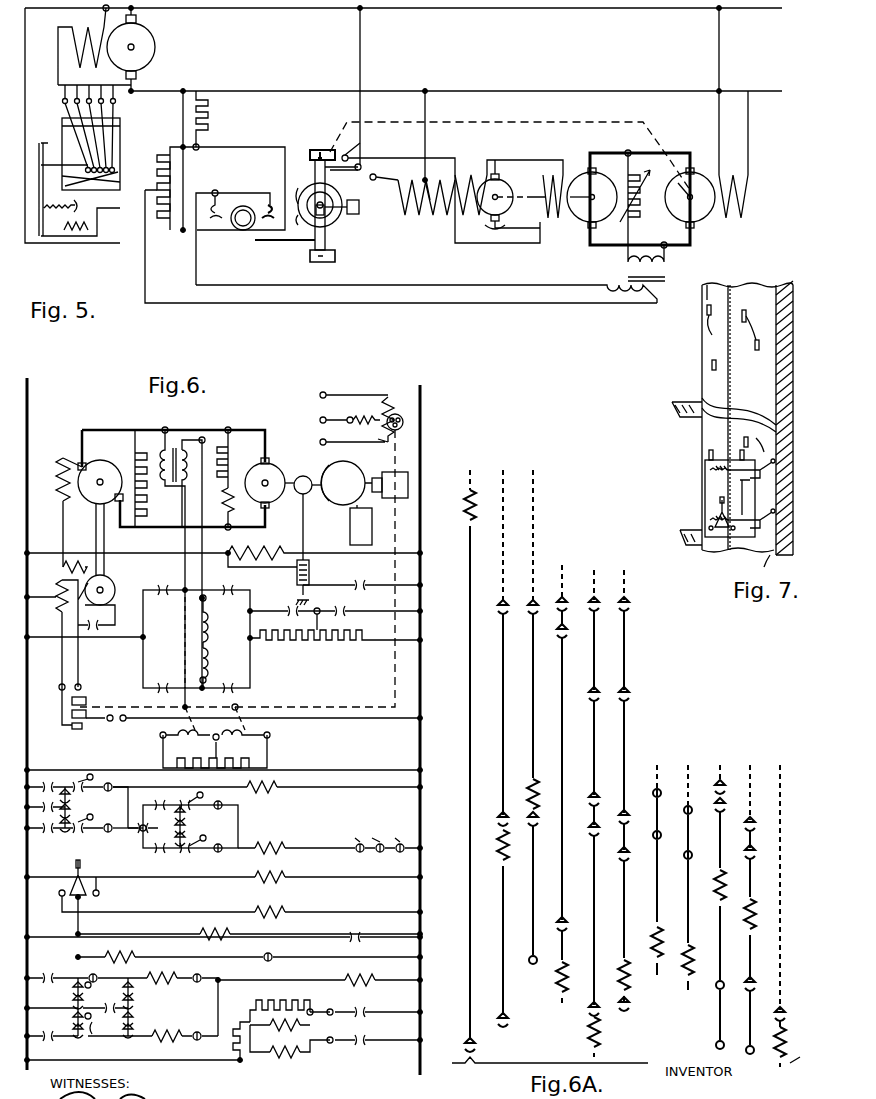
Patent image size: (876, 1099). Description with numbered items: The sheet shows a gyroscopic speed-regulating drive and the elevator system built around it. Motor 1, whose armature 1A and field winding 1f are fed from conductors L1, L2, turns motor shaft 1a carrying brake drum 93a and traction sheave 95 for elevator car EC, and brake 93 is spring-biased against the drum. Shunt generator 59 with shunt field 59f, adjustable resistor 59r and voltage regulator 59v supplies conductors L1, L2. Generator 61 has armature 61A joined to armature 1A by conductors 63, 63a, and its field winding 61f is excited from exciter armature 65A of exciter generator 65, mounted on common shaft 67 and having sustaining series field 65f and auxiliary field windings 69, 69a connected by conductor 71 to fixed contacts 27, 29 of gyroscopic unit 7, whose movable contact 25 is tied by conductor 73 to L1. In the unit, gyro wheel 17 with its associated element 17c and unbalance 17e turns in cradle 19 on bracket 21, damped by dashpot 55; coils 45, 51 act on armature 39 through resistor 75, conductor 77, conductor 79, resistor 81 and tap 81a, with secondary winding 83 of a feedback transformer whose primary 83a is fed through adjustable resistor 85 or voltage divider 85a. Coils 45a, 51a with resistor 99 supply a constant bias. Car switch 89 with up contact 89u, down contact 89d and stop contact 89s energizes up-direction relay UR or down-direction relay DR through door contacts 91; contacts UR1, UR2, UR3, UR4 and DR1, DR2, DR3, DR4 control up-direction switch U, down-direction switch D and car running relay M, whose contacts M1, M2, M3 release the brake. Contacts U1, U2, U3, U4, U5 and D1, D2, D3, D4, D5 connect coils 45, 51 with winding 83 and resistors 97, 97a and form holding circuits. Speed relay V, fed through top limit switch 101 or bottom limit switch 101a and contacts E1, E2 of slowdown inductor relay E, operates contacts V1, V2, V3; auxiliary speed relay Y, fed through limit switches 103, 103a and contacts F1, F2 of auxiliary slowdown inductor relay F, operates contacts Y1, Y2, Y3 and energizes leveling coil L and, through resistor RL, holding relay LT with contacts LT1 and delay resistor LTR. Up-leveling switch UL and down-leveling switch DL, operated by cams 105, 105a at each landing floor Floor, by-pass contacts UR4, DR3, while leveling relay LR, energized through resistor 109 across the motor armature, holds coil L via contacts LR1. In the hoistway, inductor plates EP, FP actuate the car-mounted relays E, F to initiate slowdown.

In FIG. 5, the motor 1 is at (690, 201).
In FIG. 6, the motor 1 is at (268, 456).
In FIG. 5, the motor shaft 1a is at (676, 190).
In FIG. 6, the motor shaft 1a is at (280, 475).
In FIG. 5, the motor armature 1A is at (680, 220).
In FIG. 5, the field winding 1f is at (749, 216).
In FIG. 6, the field winding 1f is at (270, 540).
In FIG. 5, the gyroscopic unit 7 is at (500, 156).
In FIG. 6, the gyroscopic unit 7 is at (388, 472).
In FIG. 5, the gyro wheel 17 is at (330, 222).
In FIG. 6, the gyro wheel 17 is at (398, 412).
In FIG. 5, the governor contacts 17c is at (295, 229).
In FIG. 6, the governor contacts 17c is at (378, 412).
In FIG. 5, the unbalance 17e is at (298, 187).
In FIG. 5, the cradle 19 is at (326, 238).
In FIG. 5, the U-shaped bracket 21 is at (337, 262).
In FIG. 5, the movable contact 25 is at (343, 176).
In FIG. 6, the movable contact 25 is at (90, 720).
In FIG. 5, the fixed contact 27 is at (378, 172).
In FIG. 6, the fixed contact 27 is at (80, 735).
In FIG. 5, the fixed contact 29 is at (356, 154).
In FIG. 6, the fixed contact 29 is at (92, 690).
In FIG. 5, the armature 39 is at (235, 226).
In FIG. 5, the coil 45 is at (220, 205).
In FIG. 6, the coil 45 is at (208, 625).
In FIG. 6, the coil 45a is at (192, 740).
In FIG. 5, the coil 51 is at (276, 196).
In FIG. 6, the coil 51 is at (209, 658).
In FIG. 6, the coil 51a is at (236, 740).
In FIG. 5, the air dashpot 55 is at (343, 195).
In FIG. 5, the direct-current generator 59 is at (142, 50).
In FIG. 5, the shunt field 59f is at (96, 27).
In FIG. 5, the adjustable resistor 59r is at (108, 86).
In FIG. 5, the voltage regulator 59v is at (73, 169).
In FIG. 5, the direct-current generator 61 is at (561, 241).
In FIG. 6, the direct-current generator 61 is at (100, 473).
In FIG. 5, the generator field winding 61f is at (546, 178).
In FIG. 6, the generator field winding 61f is at (64, 458).
In FIG. 5, the generator armature 61A is at (586, 172).
In FIG. 5, the conductor 63 is at (602, 153).
In FIG. 5, the conductor 63a is at (625, 250).
In FIG. 5, the exciter generator 65 is at (507, 185).
In FIG. 6, the exciter generator 65 is at (115, 585).
In FIG. 5, the sustaining series field winding 65f is at (460, 178).
In FIG. 6, the sustaining series field winding 65f is at (64, 560).
In FIG. 5, the exciter armature 65A is at (509, 223).
In FIG. 5, the common shaft 67 is at (517, 205).
In FIG. 6, the common shaft 67 is at (95, 522).
In FIG. 5, the auxiliary field winding 69 is at (403, 215).
In FIG. 6, the auxiliary field winding 69 is at (58, 615).
In FIG. 5, the auxiliary field winding 69a is at (440, 216).
In FIG. 6, the auxiliary field winding 69a is at (80, 603).
In FIG. 5, the conductor 71 is at (428, 112).
In FIG. 5, the conductor 73 is at (362, 60).
In FIG. 5, the resistor 75 is at (209, 116).
In FIG. 5, the conductor 77 is at (271, 148).
In FIG. 5, the conductor 79 is at (184, 170).
In FIG. 5, the resistor 81 is at (159, 158).
In FIG. 5, the adjustable tap 81a is at (155, 190).
In FIG. 5, the secondary winding 83 is at (670, 301).
In FIG. 6, the secondary winding 83 is at (205, 440).
In FIG. 5, the primary winding 83a is at (670, 263).
In FIG. 6, the primary winding 83a is at (163, 450).
In FIG. 5, the adjustable resistor 85 is at (640, 210).
In FIG. 6, the voltage divider 85a is at (147, 500).
In FIG. 6, the car switch 89 is at (76, 870).
In FIG. 7, the car switch 89 is at (718, 505).
In FIG. 6, the down contact 89d is at (60, 893).
In FIG. 6, the up contact 89u is at (100, 893).
In FIG. 6, the stop contact 89s is at (82, 899).
In FIG. 6, the door contacts 91 is at (380, 862).
In FIG. 6, the elevator brake 93 is at (309, 550).
In FIG. 6, the brake drum 93a is at (305, 476).
In FIG. 6, the traction sheave 95 is at (340, 500).
In FIG. 6, the resistor 97 is at (296, 640).
In FIG. 6, the resistor 97a is at (340, 641).
In FIG. 6, the resistor 99 is at (222, 768).
In FIG. 6, the top limit switch 101 is at (75, 784).
In FIG. 6, the bottom limit switch 101a is at (82, 834).
In FIG. 6, the top limit switch 103 is at (185, 800).
In FIG. 6, the bottom limit switch 103a is at (185, 853).
In FIG. 6, the cam 105 is at (108, 972).
In FIG. 7, the cam 105 is at (759, 443).
In FIG. 6, the cam 105a is at (98, 1035).
In FIG. 7, the cam 105a is at (781, 565).
In FIG. 6, the resistor 109 is at (230, 466).
In FIG. 5, the conductor L1 is at (682, 18).
In FIG. 6, the conductor L1 is at (30, 390).
In FIG. 5, the conductor L2 is at (682, 101).
In FIG. 6, the conductor L2 is at (423, 396).
In FIG. 6, the leveling relay LR is at (237, 509).
In FIG. 6A, the leveling relay LR is at (483, 528).
In FIG. 6, the leveling relay contacts LR1 is at (364, 1038).
In FIG. 6A, the leveling relay contacts LR1 is at (478, 1050).
In FIG. 6, the elevator car EC is at (372, 528).
In FIG. 7, the elevator car EC is at (705, 470).
In FIG. 7, the inductor plates EP is at (714, 327).
In FIG. 7, the inductor plates FP is at (754, 330).
In FIG. 7, the floor Floor is at (665, 463).
In FIG. 6, the slowdown inductor relay E is at (228, 927).
In FIG. 6A, the slowdown inductor relay E is at (668, 933).
In FIG. 7, the slowdown inductor relay E is at (708, 454).
In FIG. 6, the contacts E1 is at (110, 784).
In FIG. 6A, the contacts E1 is at (666, 786).
In FIG. 6, the contacts E2 is at (112, 820).
In FIG. 6A, the contacts E2 is at (666, 828).
In FIG. 6, the auxiliary slowdown inductor relay F is at (132, 950).
In FIG. 6A, the auxiliary slowdown inductor relay F is at (698, 953).
In FIG. 7, the auxiliary slowdown inductor relay F is at (747, 454).
In FIG. 6, the contacts F1 is at (221, 802).
In FIG. 6A, the contacts F1 is at (696, 802).
In FIG. 6, the contacts F2 is at (222, 852).
In FIG. 6A, the contacts F2 is at (696, 863).
In FIG. 6, the up-direction switch U is at (164, 1040).
In FIG. 6A, the up-direction switch U is at (585, 803).
In FIG. 6, the contacts U1 is at (166, 584).
In FIG. 6A, the contacts U1 is at (603, 606).
In FIG. 6, the contacts U2 is at (229, 682).
In FIG. 6A, the contacts U2 is at (603, 700).
In FIG. 6, the contacts U3 is at (72, 802).
In FIG. 6A, the contacts U3 is at (603, 793).
In FIG. 6, the contacts U4 is at (186, 816).
In FIG. 6A, the contacts U4 is at (603, 835).
In FIG. 6, the contacts U5 is at (134, 1018).
In FIG. 6A, the contacts U5 is at (590, 1013).
In FIG. 6, the down-direction switch D is at (176, 974).
In FIG. 6A, the down-direction switch D is at (633, 988).
In FIG. 6, the contacts D1 is at (232, 587).
In FIG. 6A, the contacts D1 is at (633, 606).
In FIG. 6, the contacts D2 is at (168, 676).
In FIG. 6A, the contacts D2 is at (633, 700).
In FIG. 6, the contacts D3 is at (66, 835).
In FIG. 6A, the contacts D3 is at (633, 812).
In FIG. 6, the contacts D4 is at (186, 832).
In FIG. 6A, the contacts D4 is at (633, 860).
In FIG. 6, the contacts D5 is at (134, 995).
In FIG. 6A, the contacts D5 is at (629, 1010).
In FIG. 6, the car running relay M is at (376, 977).
In FIG. 6A, the car running relay M is at (572, 974).
In FIG. 6, the contacts M1 is at (362, 582).
In FIG. 6A, the contacts M1 is at (573, 604).
In FIG. 6, the contacts M2 is at (105, 630).
In FIG. 6A, the contacts M2 is at (573, 637).
In FIG. 6, the contacts M3 is at (360, 934).
In FIG. 6A, the contacts M3 is at (572, 923).
In FIG. 6, the speed relay V is at (278, 780).
In FIG. 6A, the speed relay V is at (540, 798).
In FIG. 6, the contacts V1 is at (290, 608).
In FIG. 6A, the contacts V1 is at (542, 618).
In FIG. 6, the contacts V2 is at (32, 805).
In FIG. 6A, the contacts V2 is at (543, 828).
In FIG. 6, the contacts V3 is at (270, 953).
In FIG. 6A, the contacts V3 is at (543, 953).
In FIG. 6, the auxiliary speed relay Y is at (282, 840).
In FIG. 6A, the auxiliary speed relay Y is at (508, 872).
In FIG. 6, the contacts Y1 is at (346, 608).
In FIG. 6A, the contacts Y1 is at (511, 618).
In FIG. 6, the contacts Y2 is at (141, 832).
In FIG. 6A, the contacts Y2 is at (512, 817).
In FIG. 6, the contacts Y3 is at (364, 1009).
In FIG. 6A, the contacts Y3 is at (513, 1024).
In FIG. 6, the up-direction relay UR is at (287, 874).
In FIG. 6A, the up-direction relay UR is at (730, 890).
In FIG. 6, the contacts UR1 is at (45, 783).
In FIG. 6A, the contacts UR1 is at (734, 786).
In FIG. 6, the contacts UR2 is at (160, 800).
In FIG. 6A, the contacts UR2 is at (734, 806).
In FIG. 6, the contacts UR3 is at (193, 985).
In FIG. 6A, the contacts UR3 is at (707, 993).
In FIG. 6, the contacts UR4 is at (52, 1040).
In FIG. 6A, the contacts UR4 is at (707, 1037).
In FIG. 6, the down-direction relay DR is at (287, 909).
In FIG. 6A, the down-direction relay DR is at (761, 908).
In FIG. 6, the contacts DR1 is at (48, 834).
In FIG. 6A, the contacts DR1 is at (764, 819).
In FIG. 6, the contacts DR2 is at (159, 852).
In FIG. 6A, the contacts DR2 is at (764, 859).
In FIG. 6, the contacts DR3 is at (52, 976).
In FIG. 6A, the contacts DR3 is at (764, 990).
In FIG. 6, the contacts DR4 is at (195, 1032).
In FIG. 6A, the contacts DR4 is at (740, 1056).
In FIG. 6, the holding relay LT is at (305, 1023).
In FIG. 6A, the holding relay LT is at (779, 914).
In FIG. 6, the contacts LT1 is at (76, 1002).
In FIG. 6A, the contacts LT1 is at (771, 1016).
In FIG. 6, the delay resistor LTR is at (286, 990).
In FIG. 6, the resistor RL is at (246, 1040).
In FIG. 6, the leveling switch coil L is at (305, 1051).
In FIG. 7, the leveling switch coil L is at (741, 497).
In FIG. 6, the down-leveling switch DL is at (73, 990).
In FIG. 7, the down-leveling switch DL is at (764, 477).
In FIG. 6, the up-leveling switch UL is at (73, 1019).
In FIG. 7, the up-leveling switch UL is at (764, 514).